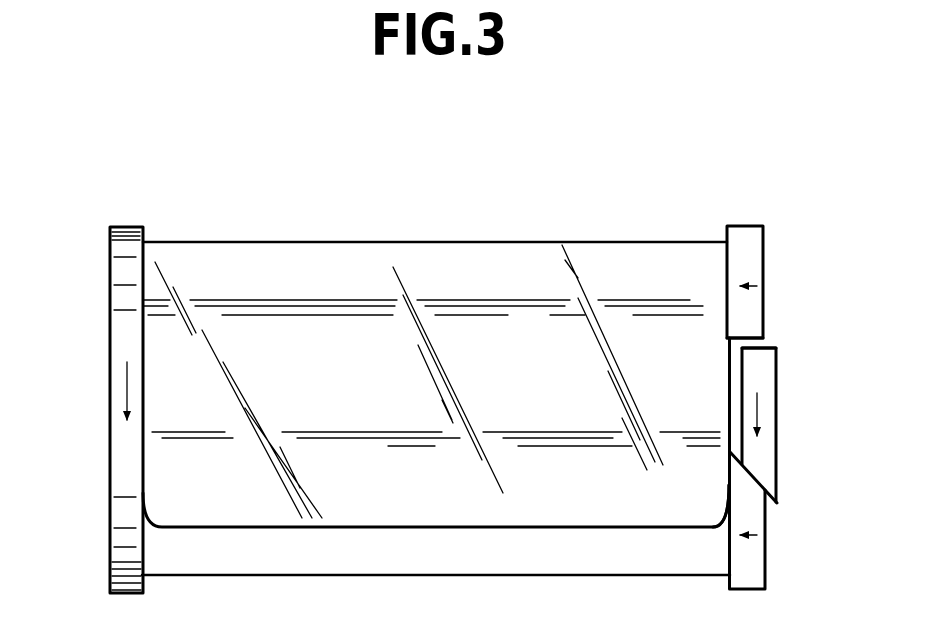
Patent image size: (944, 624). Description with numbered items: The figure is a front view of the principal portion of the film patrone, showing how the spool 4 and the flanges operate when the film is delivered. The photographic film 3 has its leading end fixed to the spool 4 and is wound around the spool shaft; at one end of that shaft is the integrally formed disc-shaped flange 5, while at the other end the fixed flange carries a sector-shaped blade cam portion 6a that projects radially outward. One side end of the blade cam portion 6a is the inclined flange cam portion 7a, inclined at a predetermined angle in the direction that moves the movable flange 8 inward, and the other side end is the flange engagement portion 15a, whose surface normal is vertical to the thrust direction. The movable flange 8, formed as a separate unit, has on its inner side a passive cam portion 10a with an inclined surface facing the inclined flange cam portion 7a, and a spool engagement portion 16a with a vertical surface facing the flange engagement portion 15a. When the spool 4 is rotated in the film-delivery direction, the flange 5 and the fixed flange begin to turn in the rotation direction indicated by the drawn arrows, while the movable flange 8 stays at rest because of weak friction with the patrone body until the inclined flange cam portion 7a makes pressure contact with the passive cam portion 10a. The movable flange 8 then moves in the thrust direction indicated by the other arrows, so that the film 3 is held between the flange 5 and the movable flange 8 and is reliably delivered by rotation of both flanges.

The photographic film 3 is at (341, 250).
The spool 4 is at (84, 376).
The flange 5 is at (127, 230).
The movable flange 8 is at (743, 233).
The blade cam portion 6a is at (772, 436).
The inclined flange cam portion 7a is at (756, 480).
The passive cam portion 10a is at (760, 478).
The flange engagement portion 15a is at (760, 344).
The spool engagement portion 16a is at (746, 336).